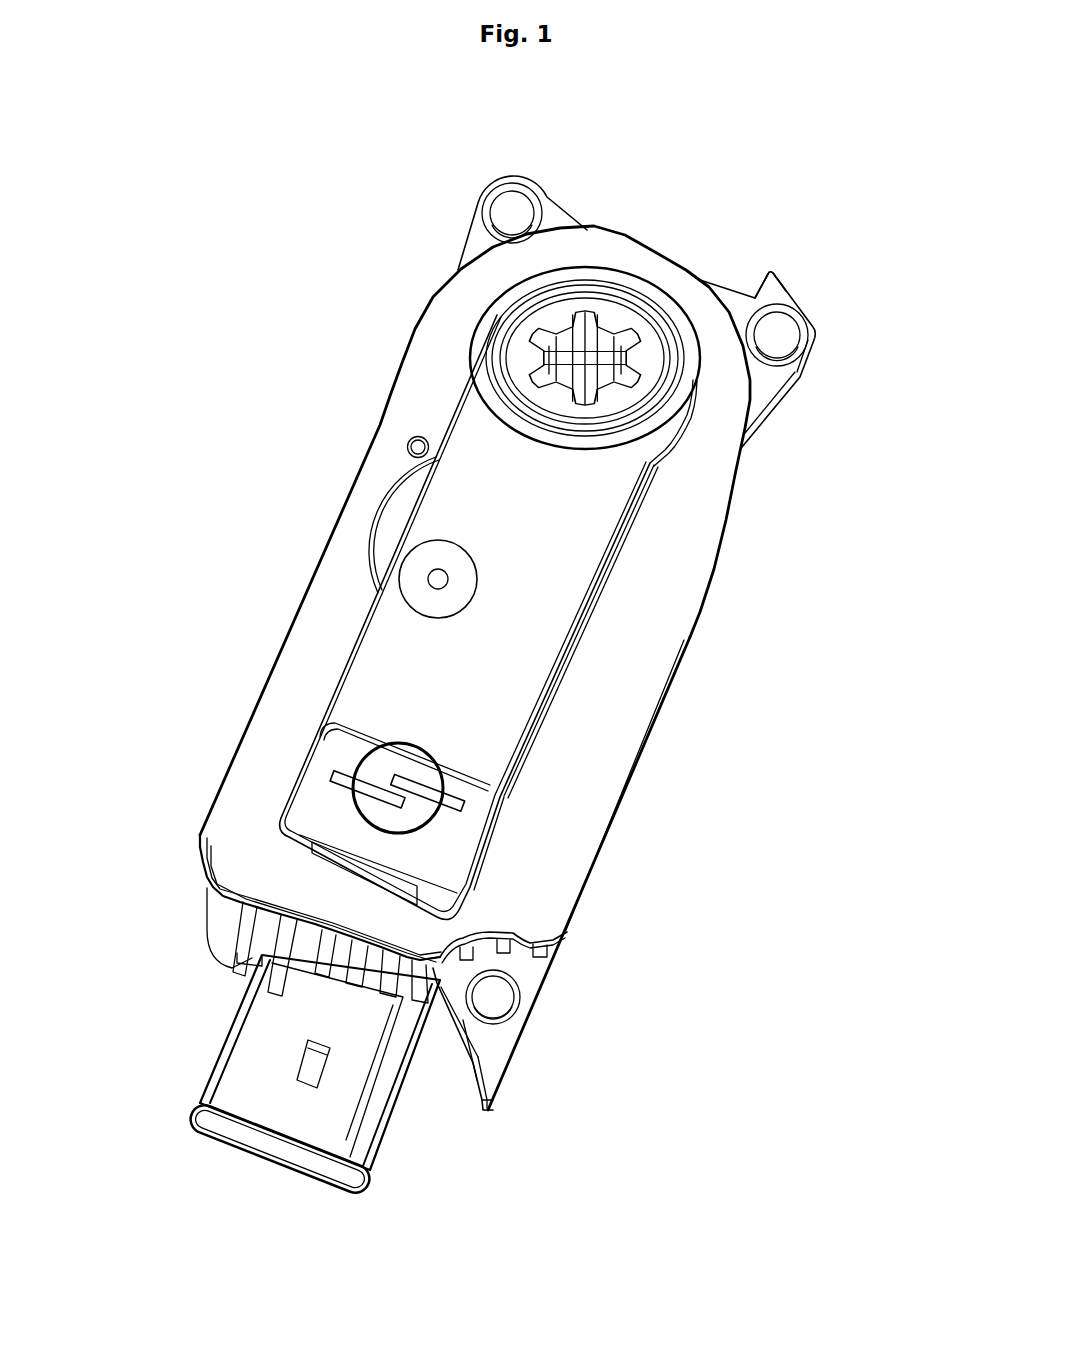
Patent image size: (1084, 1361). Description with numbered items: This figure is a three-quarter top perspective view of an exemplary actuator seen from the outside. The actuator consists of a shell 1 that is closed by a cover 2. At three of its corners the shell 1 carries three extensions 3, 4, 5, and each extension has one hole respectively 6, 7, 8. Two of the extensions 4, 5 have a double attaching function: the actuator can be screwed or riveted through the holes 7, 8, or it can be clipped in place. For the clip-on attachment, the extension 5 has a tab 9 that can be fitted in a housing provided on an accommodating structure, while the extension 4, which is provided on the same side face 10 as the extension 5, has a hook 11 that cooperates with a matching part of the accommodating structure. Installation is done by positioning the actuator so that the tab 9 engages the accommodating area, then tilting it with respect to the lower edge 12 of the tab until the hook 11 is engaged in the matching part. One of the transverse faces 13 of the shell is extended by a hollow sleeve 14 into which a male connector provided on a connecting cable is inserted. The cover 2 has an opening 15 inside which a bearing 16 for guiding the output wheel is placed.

The shell 1 is at (228, 908).
The cover 2 is at (637, 615).
The extension 3 is at (485, 228).
The extension 4 is at (767, 373).
The extension 5 is at (530, 962).
The hole 6 is at (513, 210).
The hole 7 is at (779, 326).
The hole 8 is at (503, 992).
The tab 9 is at (498, 1055).
The side face 10 is at (620, 808).
The hook 11 is at (771, 283).
The lower edge 12 is at (487, 1082).
The transverse face 13 is at (270, 955).
The hollow sleeve 14 is at (263, 1157).
The opening 15 is at (650, 343).
The bearing 16 is at (515, 419).